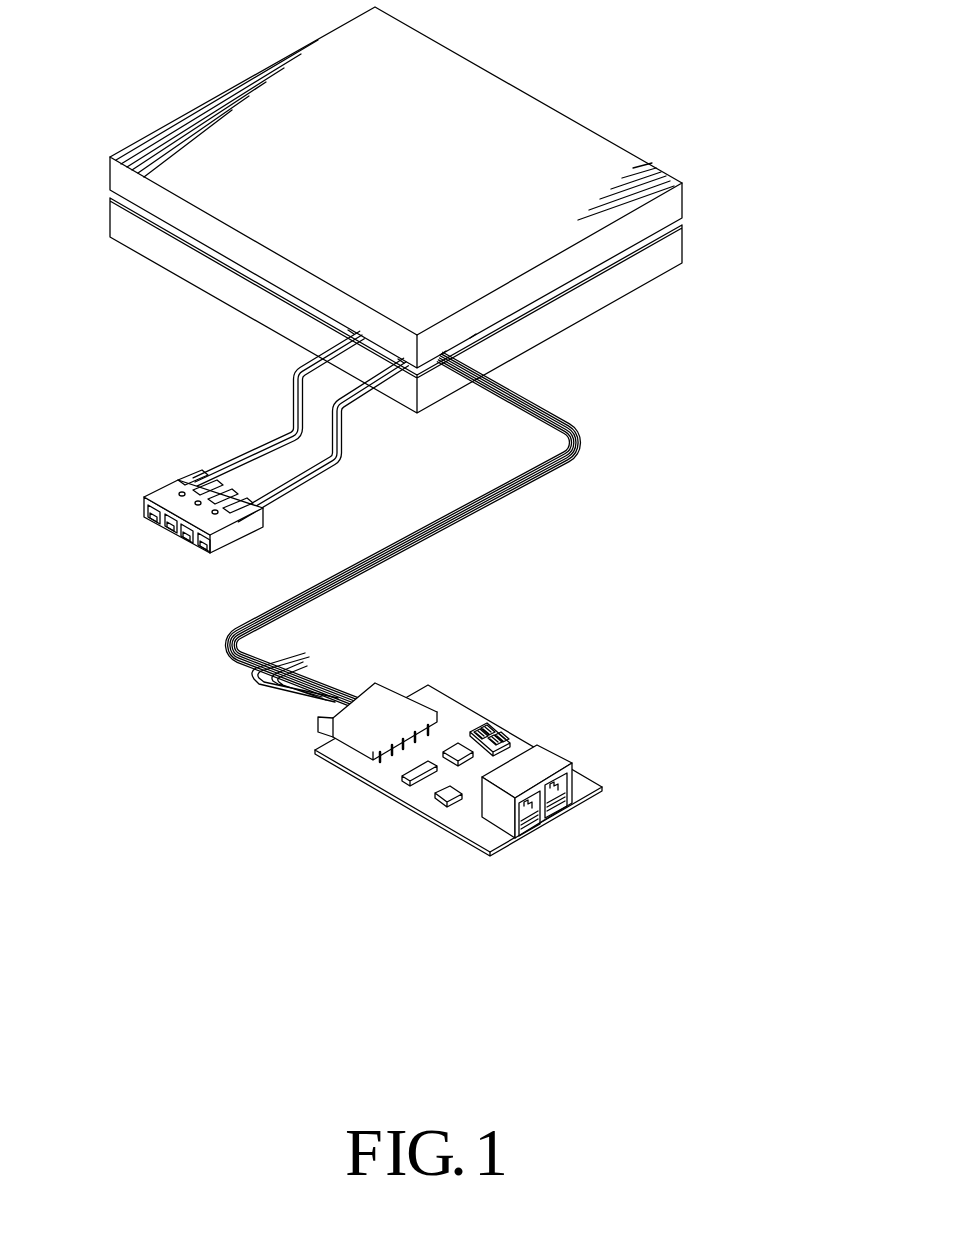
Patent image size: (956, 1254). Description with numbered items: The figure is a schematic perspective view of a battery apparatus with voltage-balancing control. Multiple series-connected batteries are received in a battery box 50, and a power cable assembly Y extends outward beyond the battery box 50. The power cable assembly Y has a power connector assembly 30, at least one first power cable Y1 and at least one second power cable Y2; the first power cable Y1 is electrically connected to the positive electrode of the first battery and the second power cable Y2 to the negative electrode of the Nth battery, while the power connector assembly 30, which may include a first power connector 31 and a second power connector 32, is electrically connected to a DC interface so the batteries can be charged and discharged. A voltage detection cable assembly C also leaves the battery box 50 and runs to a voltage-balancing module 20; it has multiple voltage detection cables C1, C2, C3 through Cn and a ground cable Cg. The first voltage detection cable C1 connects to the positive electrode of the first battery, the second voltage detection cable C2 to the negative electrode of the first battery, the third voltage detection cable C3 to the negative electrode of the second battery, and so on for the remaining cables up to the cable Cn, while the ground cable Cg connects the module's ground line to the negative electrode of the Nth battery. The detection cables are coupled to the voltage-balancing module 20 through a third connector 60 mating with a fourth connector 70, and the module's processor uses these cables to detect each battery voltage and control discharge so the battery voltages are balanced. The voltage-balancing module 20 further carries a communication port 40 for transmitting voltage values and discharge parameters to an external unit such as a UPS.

The battery box 50 is at (240, 78).
The power cable assembly Y is at (240, 445).
The first power cable Y1 is at (228, 470).
The second power cable Y2 is at (303, 472).
The power connector assembly 30 is at (165, 520).
The first power connector 31 is at (150, 522).
The second power connector 32 is at (203, 549).
The voltage detection cable assembly C is at (387, 568).
The first voltage detection cable C1 is at (337, 675).
The second voltage detection cable C2 is at (310, 667).
The third voltage detection cable C3 is at (303, 705).
The Nth voltage detection cable Cn is at (282, 692).
The ground cable Cg is at (262, 678).
The third connector 60 is at (380, 688).
The fourth connector 70 is at (413, 710).
The communication port 40 is at (538, 760).
The voltage-balancing module 20 is at (458, 759).